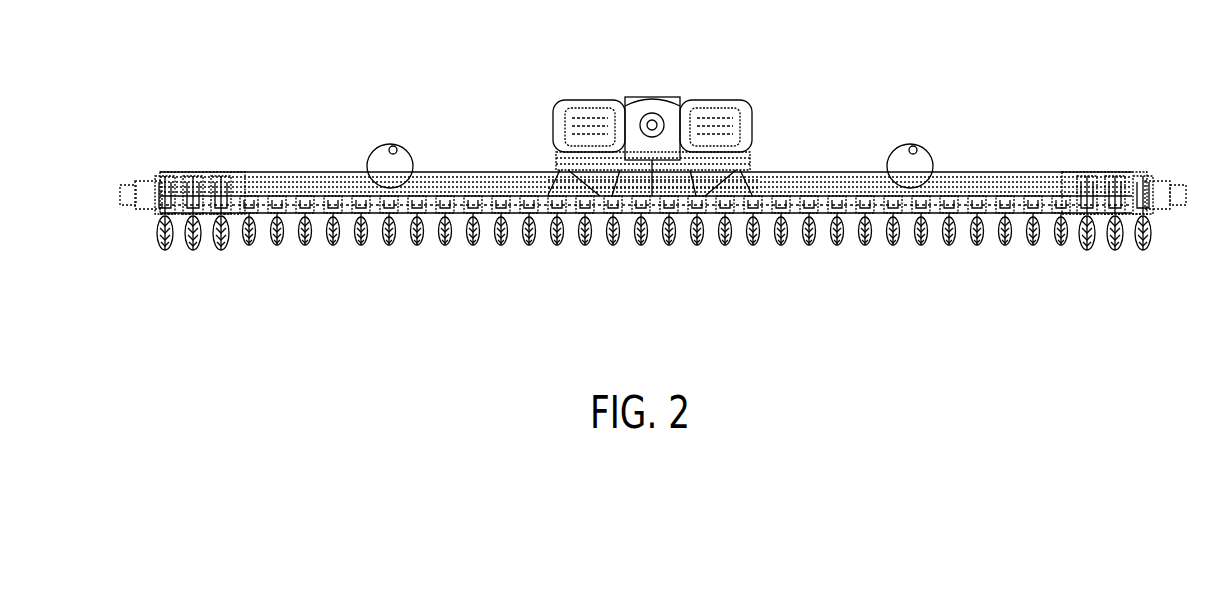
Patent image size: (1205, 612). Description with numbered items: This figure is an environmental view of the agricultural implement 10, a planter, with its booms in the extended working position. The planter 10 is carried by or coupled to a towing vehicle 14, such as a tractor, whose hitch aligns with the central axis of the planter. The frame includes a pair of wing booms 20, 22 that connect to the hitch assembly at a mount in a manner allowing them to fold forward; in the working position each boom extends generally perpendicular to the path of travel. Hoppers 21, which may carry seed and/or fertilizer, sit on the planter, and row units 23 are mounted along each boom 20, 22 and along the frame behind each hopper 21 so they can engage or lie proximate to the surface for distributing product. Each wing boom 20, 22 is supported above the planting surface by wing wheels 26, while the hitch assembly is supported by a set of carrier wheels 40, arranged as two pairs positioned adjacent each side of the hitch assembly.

The agricultural implement 10 is at (432, 132).
The towing vehicle 14 is at (653, 109).
The wing boom 20 is at (198, 175).
The hopper 21 is at (562, 110).
The wing boom 22 is at (1120, 178).
The row unit 23 is at (332, 257).
The wing wheel 26 is at (205, 246).
The carrier wheel 40 is at (672, 244).